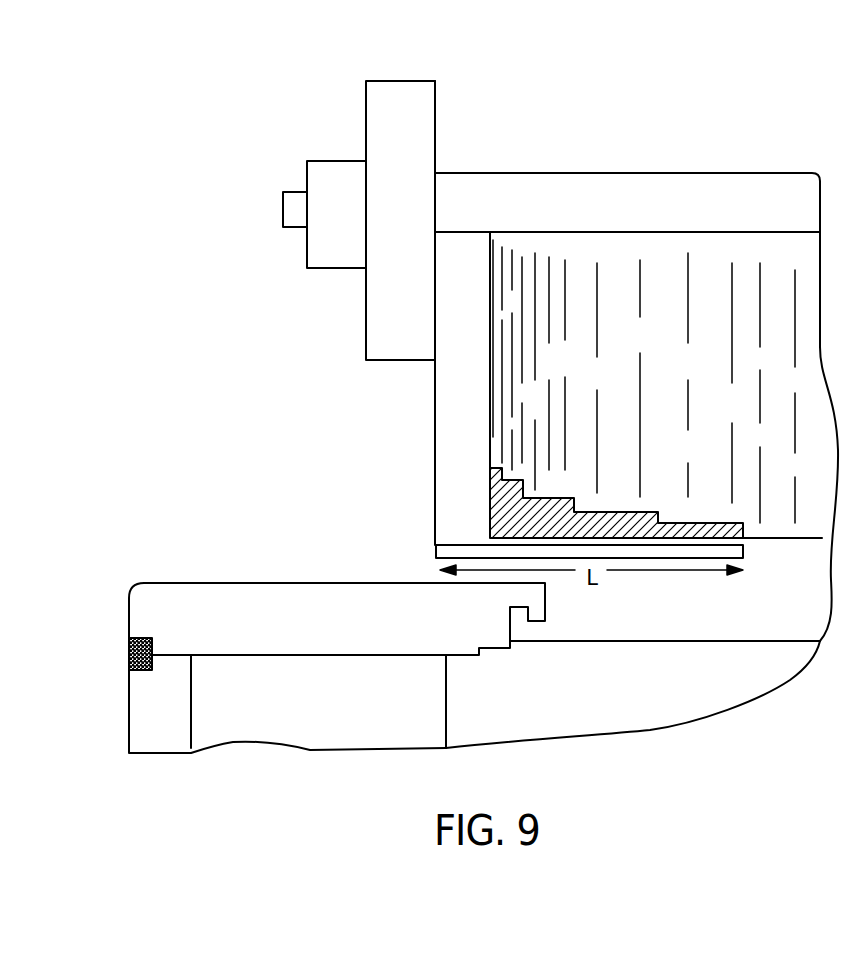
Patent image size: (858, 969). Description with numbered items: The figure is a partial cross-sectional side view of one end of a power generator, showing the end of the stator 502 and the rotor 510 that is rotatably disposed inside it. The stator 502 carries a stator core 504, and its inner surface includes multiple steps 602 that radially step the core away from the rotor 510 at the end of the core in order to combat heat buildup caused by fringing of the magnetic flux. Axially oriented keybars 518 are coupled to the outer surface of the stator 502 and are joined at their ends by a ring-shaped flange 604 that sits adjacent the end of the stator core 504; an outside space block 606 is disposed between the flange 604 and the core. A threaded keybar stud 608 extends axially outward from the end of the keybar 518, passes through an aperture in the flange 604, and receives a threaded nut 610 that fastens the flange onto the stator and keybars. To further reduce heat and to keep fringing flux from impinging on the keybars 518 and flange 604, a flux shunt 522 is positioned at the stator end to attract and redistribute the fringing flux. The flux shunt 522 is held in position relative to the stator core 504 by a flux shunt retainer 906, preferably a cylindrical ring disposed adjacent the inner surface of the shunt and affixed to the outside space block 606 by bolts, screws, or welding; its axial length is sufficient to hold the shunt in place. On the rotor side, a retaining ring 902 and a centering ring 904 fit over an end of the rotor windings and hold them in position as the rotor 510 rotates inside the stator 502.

The stator 502 is at (717, 255).
The stator core 504 is at (588, 265).
The rotor 510 is at (730, 650).
The keybar 518 is at (648, 190).
The flux shunt 522 is at (607, 517).
The steps 602 is at (585, 461).
The flange 604 is at (400, 81).
The outside space block 606 is at (435, 440).
The keybar stud 608 is at (283, 208).
The threaded nut 610 is at (332, 160).
The retaining ring 902 is at (140, 610).
The centering ring 904 is at (142, 707).
The flux shunt retainer 906 is at (436, 553).